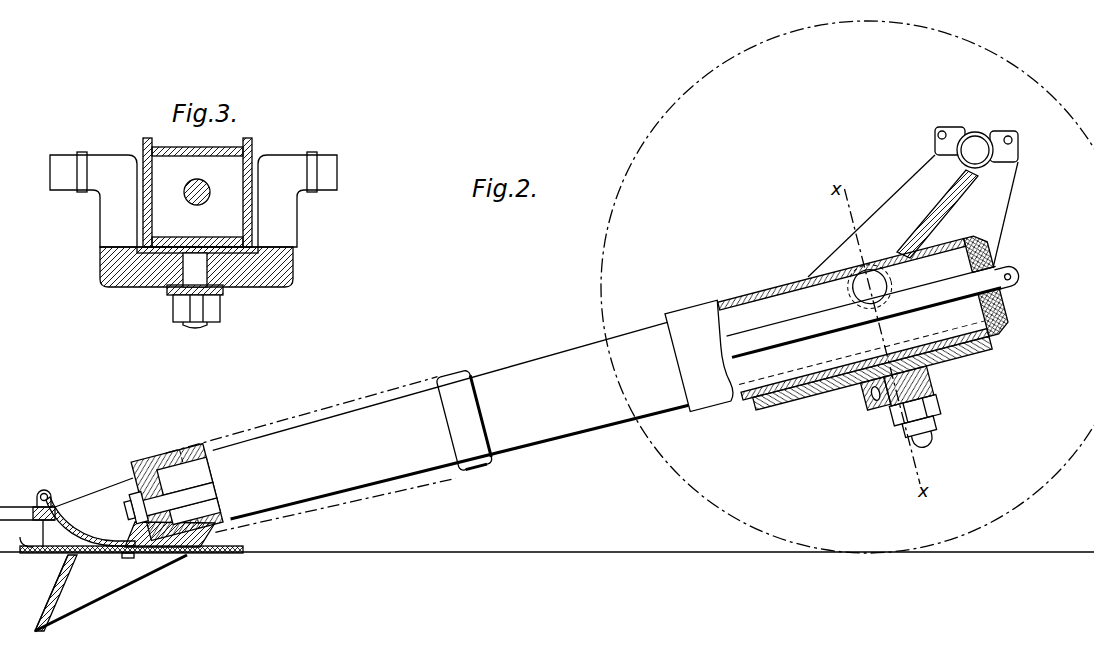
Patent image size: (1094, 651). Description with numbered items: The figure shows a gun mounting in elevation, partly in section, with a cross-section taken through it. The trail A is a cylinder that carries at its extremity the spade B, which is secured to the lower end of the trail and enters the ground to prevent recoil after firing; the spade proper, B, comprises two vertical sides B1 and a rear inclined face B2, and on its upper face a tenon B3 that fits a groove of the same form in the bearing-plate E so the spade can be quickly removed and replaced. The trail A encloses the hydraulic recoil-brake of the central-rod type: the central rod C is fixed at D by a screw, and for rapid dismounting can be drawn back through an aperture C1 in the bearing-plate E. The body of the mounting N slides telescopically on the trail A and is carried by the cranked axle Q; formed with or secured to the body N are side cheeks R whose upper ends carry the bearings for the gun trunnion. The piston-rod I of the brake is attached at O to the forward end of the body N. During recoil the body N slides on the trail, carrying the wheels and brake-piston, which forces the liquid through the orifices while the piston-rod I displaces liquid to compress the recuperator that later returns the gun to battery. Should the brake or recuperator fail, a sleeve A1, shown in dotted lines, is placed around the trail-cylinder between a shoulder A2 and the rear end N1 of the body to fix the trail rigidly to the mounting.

In FIG. 2, the trail A is at (449, 422).
In FIG. 2, the sleeve A1 is at (366, 512).
In FIG. 2, the shoulder A2 is at (183, 455).
In FIG. 2, the spade B is at (111, 593).
In FIG. 2, the vertical sides B1 is at (105, 553).
In FIG. 2, the rear inclined face B2 is at (55, 593).
In FIG. 2, the tenon B3 is at (128, 558).
In FIG. 2, the central rod C is at (177, 494).
In FIG. 2, the aperture C1 is at (66, 512).
In FIG. 2, the fixing point of central rod D is at (137, 500).
In FIG. 2, the bearing-plate E is at (88, 539).
In FIG. 2, the piston-rod I is at (874, 310).
In FIG. 2, the body of the mounting N is at (839, 328).
In FIG. 3, the body of the mounting N is at (197, 191).
In FIG. 2, the rear end of the body N1 is at (462, 377).
In FIG. 2, the attachment point of piston-rod O is at (904, 411).
In FIG. 3, the axle Q is at (193, 240).
In FIG. 2, the side cheeks R is at (913, 202).